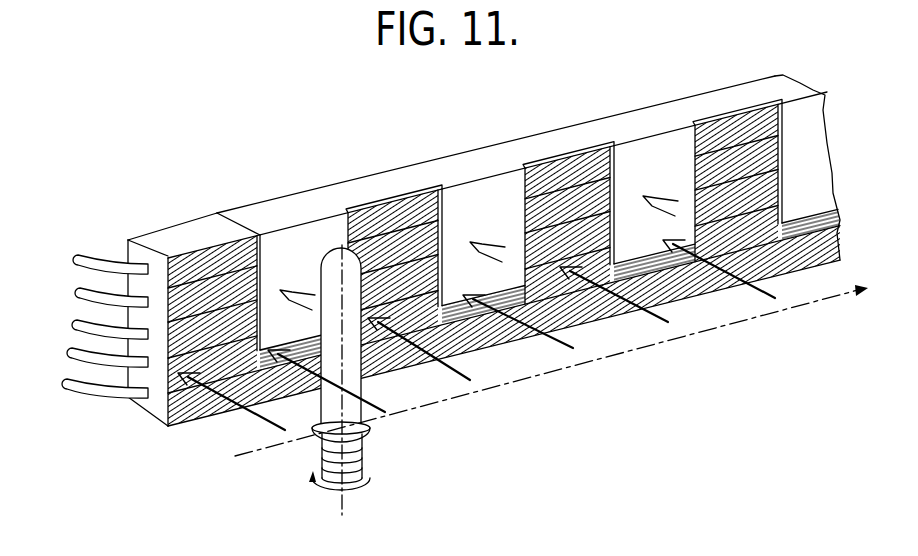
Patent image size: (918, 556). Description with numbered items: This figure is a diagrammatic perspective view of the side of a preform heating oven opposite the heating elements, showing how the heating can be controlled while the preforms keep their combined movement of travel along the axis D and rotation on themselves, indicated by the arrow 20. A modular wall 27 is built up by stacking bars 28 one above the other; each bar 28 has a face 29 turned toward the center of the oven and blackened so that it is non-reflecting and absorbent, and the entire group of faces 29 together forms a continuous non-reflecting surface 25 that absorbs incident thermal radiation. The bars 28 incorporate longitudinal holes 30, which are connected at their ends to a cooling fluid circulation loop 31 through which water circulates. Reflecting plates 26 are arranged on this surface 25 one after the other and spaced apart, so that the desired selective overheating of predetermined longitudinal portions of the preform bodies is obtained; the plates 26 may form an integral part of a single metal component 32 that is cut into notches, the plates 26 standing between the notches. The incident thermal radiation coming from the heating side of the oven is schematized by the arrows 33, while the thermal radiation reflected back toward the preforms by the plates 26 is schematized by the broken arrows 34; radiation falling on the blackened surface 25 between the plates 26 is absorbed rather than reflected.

The arrow 20 is at (313, 484).
The continuous non-reflecting surface 25 is at (684, 292).
The reflecting plates 26 is at (318, 245).
The modular wall 27 is at (146, 432).
The bars 28 is at (166, 337).
The face 29 is at (568, 242).
The longitudinal holes 30 is at (72, 353).
The cooling fluid circulation loop 31 is at (100, 265).
The single metal component 32 is at (442, 160).
The arrows 33 is at (640, 312).
The broken arrows 34 is at (281, 288).
The axis D is at (551, 370).